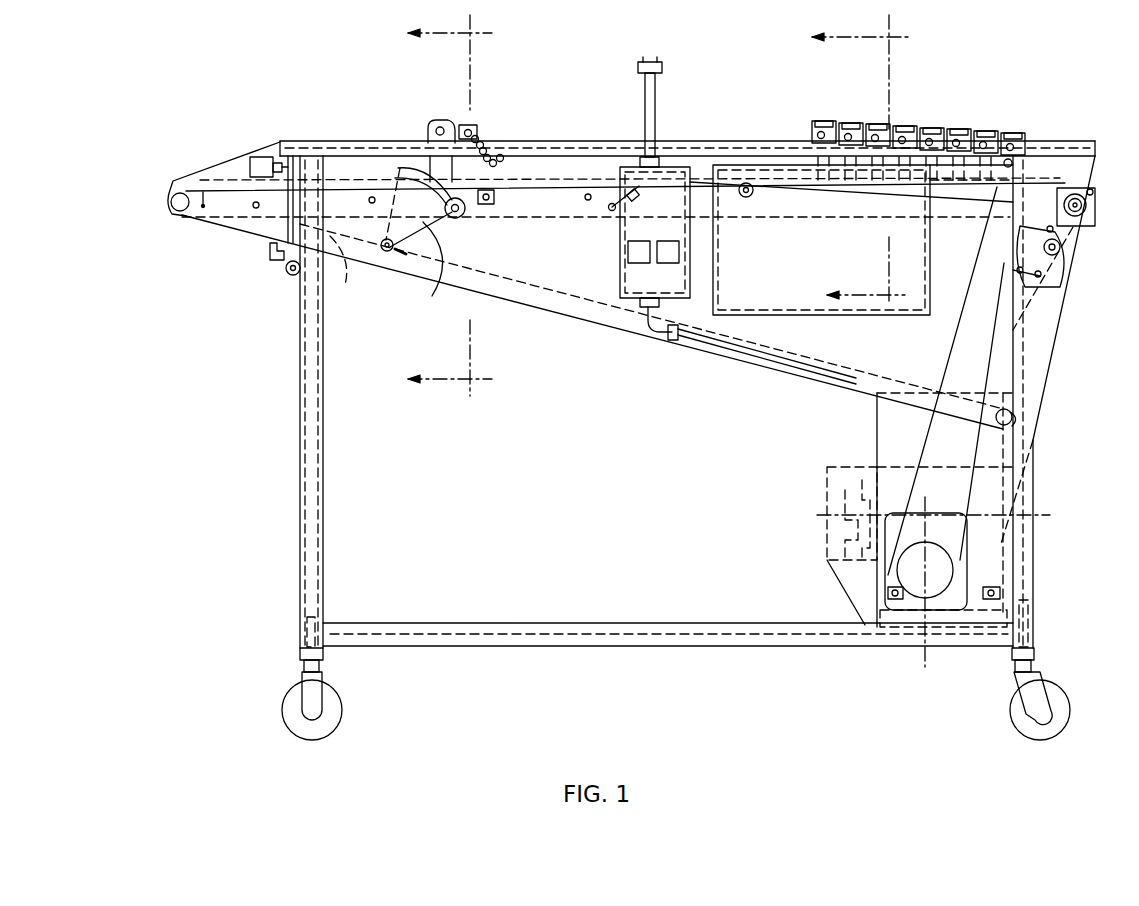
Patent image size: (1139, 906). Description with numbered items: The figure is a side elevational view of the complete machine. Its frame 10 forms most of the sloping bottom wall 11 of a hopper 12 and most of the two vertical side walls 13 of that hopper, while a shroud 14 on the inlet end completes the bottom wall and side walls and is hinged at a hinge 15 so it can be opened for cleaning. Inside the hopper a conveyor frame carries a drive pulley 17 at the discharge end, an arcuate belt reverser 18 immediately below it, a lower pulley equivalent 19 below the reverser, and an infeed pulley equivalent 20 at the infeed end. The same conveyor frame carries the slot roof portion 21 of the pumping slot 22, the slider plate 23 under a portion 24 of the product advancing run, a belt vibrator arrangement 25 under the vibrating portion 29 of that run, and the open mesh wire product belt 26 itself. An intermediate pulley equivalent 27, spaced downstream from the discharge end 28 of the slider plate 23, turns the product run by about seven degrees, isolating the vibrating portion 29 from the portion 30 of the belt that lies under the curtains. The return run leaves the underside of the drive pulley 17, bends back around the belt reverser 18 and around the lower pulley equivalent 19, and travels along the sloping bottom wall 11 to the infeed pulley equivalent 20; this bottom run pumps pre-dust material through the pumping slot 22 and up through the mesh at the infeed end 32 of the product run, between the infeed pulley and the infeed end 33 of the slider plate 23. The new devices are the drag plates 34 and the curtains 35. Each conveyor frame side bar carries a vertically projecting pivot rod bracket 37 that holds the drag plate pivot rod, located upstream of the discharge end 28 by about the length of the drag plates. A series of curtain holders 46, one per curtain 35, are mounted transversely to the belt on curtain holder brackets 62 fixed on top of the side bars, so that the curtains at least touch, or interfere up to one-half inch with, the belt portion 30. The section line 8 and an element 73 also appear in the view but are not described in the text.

The section line 8- 8 is at (439, 205).
The frame 10 is at (326, 474).
The sloping bottom wall 11 is at (203, 223).
The hopper 12 is at (532, 262).
The vertical side walls 13 is at (227, 211).
The shroud 14 is at (173, 211).
The hinge 15 is at (290, 276).
The drive pulley 17 is at (1084, 200).
The arcuate belt reverser 18 is at (1022, 252).
The lower pulley equivalent 19 is at (1011, 422).
The infeed pulley equivalent 20 is at (171, 196).
The slot roof portion 21 is at (391, 258).
The pumping slot 22 is at (386, 253).
The slider plate 23 is at (466, 212).
The portion of the product advancing run 24 is at (384, 242).
The belt vibrator arrangement 25 is at (638, 184).
The product belt 26 is at (563, 184).
The intermediate pulley equivalent 27 is at (745, 183).
The discharge end of the slider plate 28 is at (495, 196).
The vibrating portion of the product run 29 is at (540, 186).
The portion of the product belt under the curtains 30 is at (972, 184).
The infeed end of the product advancing run 32 is at (204, 190).
The infeed end of the slider plate 33 is at (238, 208).
The drag plates 34 is at (430, 118).
The curtains 35 is at (905, 176).
The pivot rod bracket 37 is at (450, 140).
The curtain holders 46 is at (864, 123).
The curtain holder brackets 62 is at (812, 138).
The link 73 is at (429, 271).